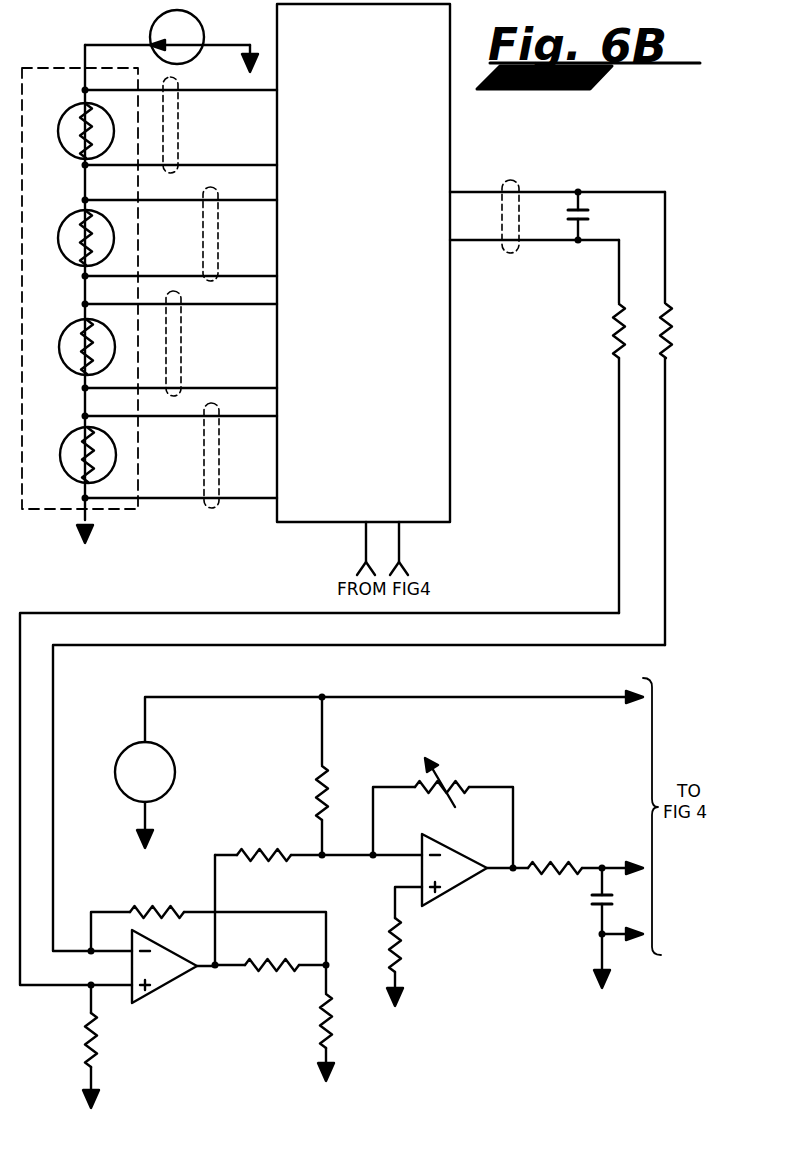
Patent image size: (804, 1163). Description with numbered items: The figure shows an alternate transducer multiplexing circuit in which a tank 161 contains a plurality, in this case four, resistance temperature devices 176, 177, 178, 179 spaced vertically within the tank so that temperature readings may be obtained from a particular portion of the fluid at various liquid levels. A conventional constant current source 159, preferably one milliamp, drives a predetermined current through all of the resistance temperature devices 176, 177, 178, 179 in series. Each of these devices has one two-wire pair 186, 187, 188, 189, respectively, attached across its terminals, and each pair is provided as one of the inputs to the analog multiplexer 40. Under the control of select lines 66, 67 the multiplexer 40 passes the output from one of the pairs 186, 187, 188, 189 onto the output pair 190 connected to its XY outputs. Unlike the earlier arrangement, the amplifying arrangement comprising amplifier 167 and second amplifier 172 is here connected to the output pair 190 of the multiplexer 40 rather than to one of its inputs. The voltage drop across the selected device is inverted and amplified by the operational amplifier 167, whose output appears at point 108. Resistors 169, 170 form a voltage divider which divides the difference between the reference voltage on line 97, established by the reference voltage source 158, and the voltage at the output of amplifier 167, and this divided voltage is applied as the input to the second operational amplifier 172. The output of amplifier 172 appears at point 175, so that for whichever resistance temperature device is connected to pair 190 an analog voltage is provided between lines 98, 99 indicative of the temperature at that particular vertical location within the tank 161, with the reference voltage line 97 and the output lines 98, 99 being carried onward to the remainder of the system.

The analog multiplexer 40 is at (451, 143).
The select line 66 is at (401, 533).
The select line 67 is at (363, 542).
The reference voltage line 97 is at (373, 700).
The output line 98 is at (624, 845).
The output line 99 is at (618, 937).
The amplifier output node 108 is at (212, 970).
The reference voltage source 158 is at (116, 763).
The constant current source 159 is at (150, 24).
The tank 161 is at (56, 65).
The operational amplifier 167 is at (164, 984).
The resistor 169 is at (319, 786).
The resistor 170 is at (262, 845).
The second operational amplifier 172 is at (439, 900).
The output point 175 is at (510, 872).
The resistance temperature device 176 is at (58, 130).
The resistance temperature device 177 is at (60, 228).
The resistance temperature device 178 is at (60, 338).
The resistance temperature device 179 is at (62, 444).
The two-wire pair 186 is at (180, 140).
The two-wire pair 187 is at (202, 241).
The two-wire pair 188 is at (180, 353).
The two-wire pair 189 is at (202, 471).
The output pair 190 is at (507, 180).